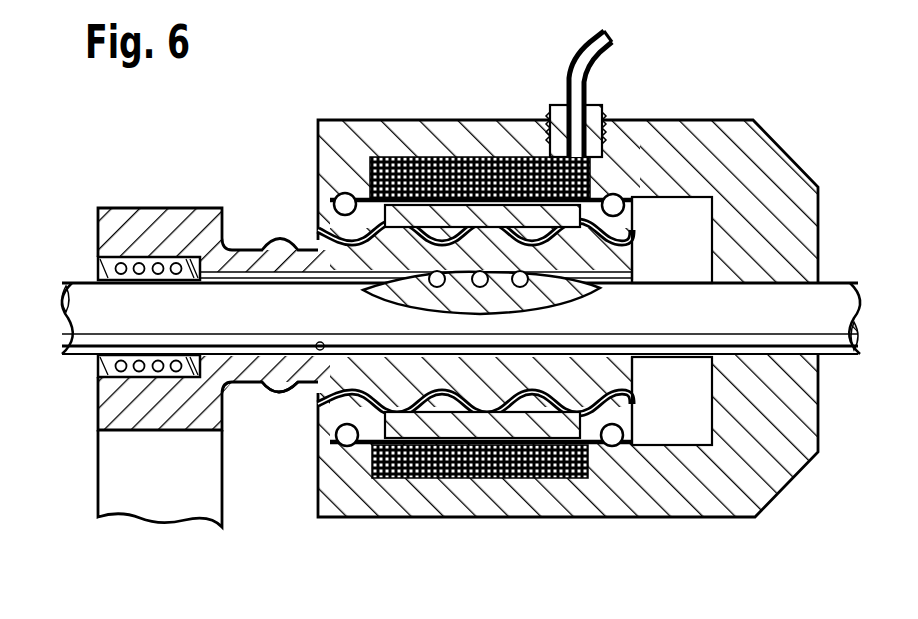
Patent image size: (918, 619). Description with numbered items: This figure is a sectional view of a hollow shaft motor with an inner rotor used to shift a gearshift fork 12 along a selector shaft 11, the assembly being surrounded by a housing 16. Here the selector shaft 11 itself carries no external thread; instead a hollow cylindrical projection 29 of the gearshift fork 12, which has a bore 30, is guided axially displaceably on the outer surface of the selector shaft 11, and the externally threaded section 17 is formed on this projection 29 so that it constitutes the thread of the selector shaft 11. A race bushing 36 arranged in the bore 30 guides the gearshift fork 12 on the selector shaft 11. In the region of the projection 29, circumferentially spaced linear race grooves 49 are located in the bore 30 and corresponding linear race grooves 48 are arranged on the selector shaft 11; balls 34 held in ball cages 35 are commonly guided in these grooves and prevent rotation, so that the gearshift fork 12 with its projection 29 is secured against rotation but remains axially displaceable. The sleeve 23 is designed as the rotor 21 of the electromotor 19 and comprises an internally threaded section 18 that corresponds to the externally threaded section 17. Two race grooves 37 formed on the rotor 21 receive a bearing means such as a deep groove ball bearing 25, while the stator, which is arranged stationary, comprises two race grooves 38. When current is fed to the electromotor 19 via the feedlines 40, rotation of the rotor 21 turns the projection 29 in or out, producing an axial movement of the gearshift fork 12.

The selector shaft 11 is at (828, 306).
The gearshift fork 12 is at (118, 420).
The housing 16 is at (453, 100).
The externally threaded section 17 is at (383, 204).
The internally threaded section 18 is at (480, 129).
The electromotor 19 is at (488, 479).
The rotor 21 is at (480, 129).
The sleeve 23 is at (497, 157).
The deep groove ball bearing 25 is at (345, 192).
The hollow cylindrical projection 29 is at (264, 394).
The bore 30 is at (319, 350).
The balls 34 is at (527, 305).
The ball cages 35 is at (366, 289).
The race bushing 36 is at (120, 262).
The race grooves 37 is at (630, 236).
The race grooves 38 is at (614, 193).
The feedlines 40 is at (586, 56).
The linear race grooves 48 is at (586, 291).
The linear race grooves 49 is at (633, 268).